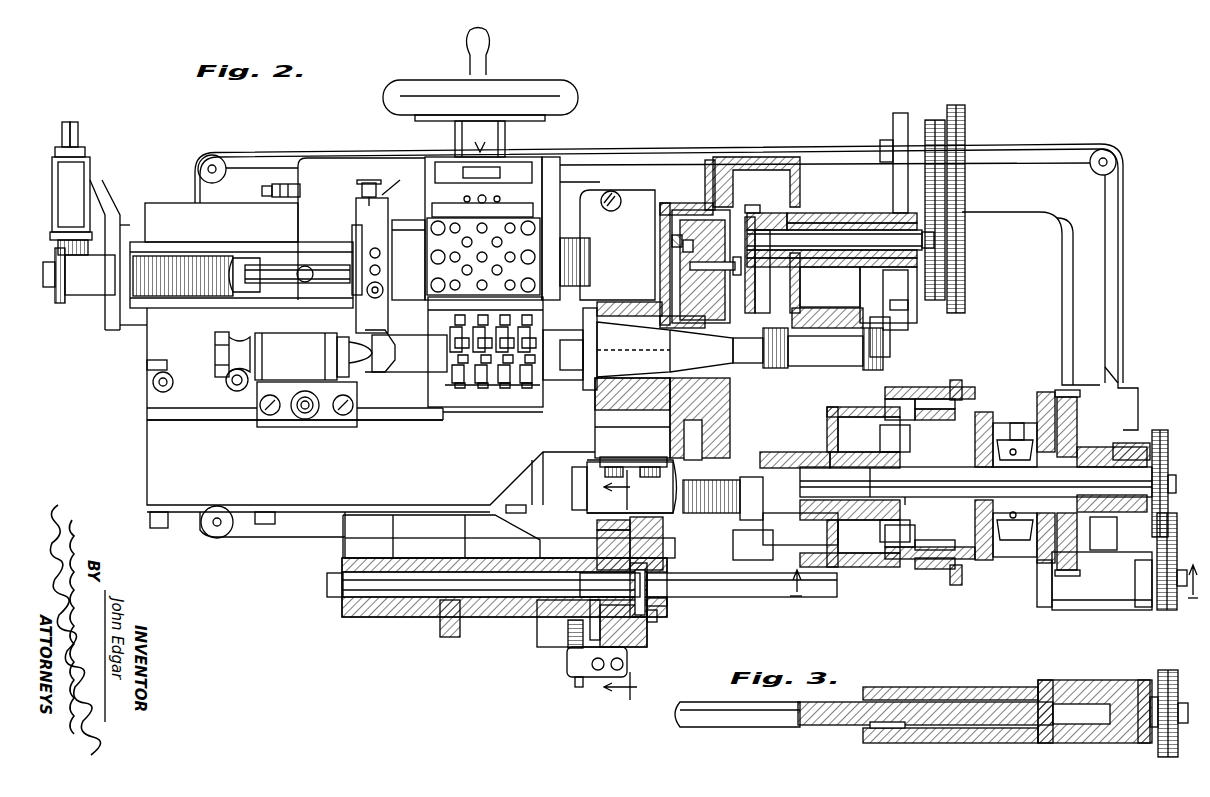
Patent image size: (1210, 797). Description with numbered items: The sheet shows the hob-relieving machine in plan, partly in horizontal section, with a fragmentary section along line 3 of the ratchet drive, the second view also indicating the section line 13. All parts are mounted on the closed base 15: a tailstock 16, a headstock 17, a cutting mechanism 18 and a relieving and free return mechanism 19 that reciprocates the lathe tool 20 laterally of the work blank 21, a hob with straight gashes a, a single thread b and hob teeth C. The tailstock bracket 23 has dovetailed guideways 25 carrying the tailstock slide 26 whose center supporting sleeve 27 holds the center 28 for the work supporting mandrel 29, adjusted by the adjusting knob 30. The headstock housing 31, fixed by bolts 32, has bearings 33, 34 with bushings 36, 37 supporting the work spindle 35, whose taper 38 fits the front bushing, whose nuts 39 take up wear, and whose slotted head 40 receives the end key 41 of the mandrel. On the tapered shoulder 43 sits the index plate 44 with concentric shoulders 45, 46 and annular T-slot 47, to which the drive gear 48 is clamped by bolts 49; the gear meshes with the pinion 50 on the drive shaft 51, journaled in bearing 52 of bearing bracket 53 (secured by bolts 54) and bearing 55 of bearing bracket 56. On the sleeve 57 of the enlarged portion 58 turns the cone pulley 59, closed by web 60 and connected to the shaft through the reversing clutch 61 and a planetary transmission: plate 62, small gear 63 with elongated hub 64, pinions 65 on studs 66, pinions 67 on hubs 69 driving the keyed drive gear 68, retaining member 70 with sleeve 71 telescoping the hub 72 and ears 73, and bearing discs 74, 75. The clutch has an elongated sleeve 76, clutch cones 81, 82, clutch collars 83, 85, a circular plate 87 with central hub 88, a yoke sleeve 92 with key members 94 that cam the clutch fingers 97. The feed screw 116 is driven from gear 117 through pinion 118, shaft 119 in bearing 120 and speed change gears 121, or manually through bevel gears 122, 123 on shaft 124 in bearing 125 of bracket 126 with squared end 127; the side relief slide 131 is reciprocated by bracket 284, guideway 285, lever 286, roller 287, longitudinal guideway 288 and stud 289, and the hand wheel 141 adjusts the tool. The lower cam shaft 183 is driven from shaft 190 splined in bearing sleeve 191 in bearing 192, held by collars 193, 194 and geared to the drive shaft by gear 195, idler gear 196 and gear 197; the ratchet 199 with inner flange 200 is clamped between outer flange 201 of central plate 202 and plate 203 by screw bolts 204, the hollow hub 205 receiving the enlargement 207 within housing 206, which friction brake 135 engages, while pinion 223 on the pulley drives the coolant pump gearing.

In FIG. 2, the section line 13 is at (620, 588).
In FIG. 2, the closed base 15 is at (1110, 258).
In FIG. 2, the tailstock 16 is at (166, 403).
In FIG. 2, the headstock 17 is at (643, 291).
In FIG. 2, the cutting mechanism 18 is at (572, 183).
In FIG. 2, the relieving and free return mechanism 19 is at (424, 637).
In FIG. 2, the lathe tool 20 is at (510, 305).
In FIG. 2, the work blank 21 is at (450, 388).
In FIG. 2, the bracket 23 is at (157, 462).
In FIG. 2, the dovetailed guideways 25 is at (155, 420).
In FIG. 2, the tailstock slide 26 is at (295, 417).
In FIG. 2, the center supporting sleeve 27 is at (283, 364).
In FIG. 2, the center 28 is at (360, 335).
In FIG. 2, the work supporting mandrel 29 is at (395, 360).
In FIG. 2, the adjusting knob 30 is at (218, 352).
In FIG. 2, the housing 31 is at (770, 160).
In FIG. 2, the bolts 32 is at (611, 201).
In FIG. 2, the bearing 33 is at (820, 298).
In FIG. 2, the bearing 34 is at (595, 300).
In FIG. 2, the work spindle 35 is at (828, 325).
In FIG. 2, the bushing 36 is at (858, 335).
In FIG. 2, the front bushing 37 is at (620, 315).
In FIG. 2, the taper 38 is at (665, 339).
In FIG. 2, the nuts 39 is at (880, 335).
In FIG. 2, the slotted head 40 is at (590, 322).
In FIG. 2, the end key 41 is at (575, 352).
In FIG. 2, the tapered shoulder 43 is at (675, 355).
In FIG. 2, the index plate 44 is at (672, 245).
In FIG. 2, the concentric shoulder 45 is at (715, 370).
In FIG. 2, the concentric shoulder 46 is at (675, 416).
In FIG. 2, the annular T-slot 47 is at (680, 442).
In FIG. 2, the drive gear 48 is at (680, 222).
In FIG. 2, the bolts 49 is at (690, 266).
In FIG. 2, the pinion 50 is at (703, 515).
In FIG. 2, the drive shaft 51 is at (1103, 533).
In FIG. 2, the bearing 52 is at (600, 482).
In FIG. 2, the bearing bracket 53 is at (590, 462).
In FIG. 2, the bolts 54 is at (613, 466).
In FIG. 2, the bearing 55 is at (1131, 438).
In FIG. 2, the bearing bracket 56 is at (1127, 393).
In FIG. 2, the sleeve 57 is at (776, 460).
In FIG. 2, the enlarged portion 58 is at (793, 462).
In FIG. 2, the cone pulley 59 is at (863, 401).
In FIG. 2, the web 60 is at (830, 526).
In FIG. 2, the reversing clutch 61 is at (1015, 356).
In FIG. 2, the plate 62 is at (955, 380).
In FIG. 2, the small gear 63 is at (976, 482).
In FIG. 2, the elongated hub 64 is at (1085, 476).
In FIG. 2, the pinions 65 is at (932, 408).
In FIG. 2, the studs 66 is at (985, 412).
In FIG. 2, the pinions 67 is at (910, 405).
In FIG. 2, the drive gear 68 is at (910, 478).
In FIG. 2, the hubs 69 is at (905, 395).
In FIG. 2, the annular retaining member 70 is at (898, 546).
In FIG. 2, the sleeve 71 is at (865, 535).
In FIG. 2, the hub 72 is at (845, 450).
In FIG. 2, the ears 73 is at (895, 430).
In FIG. 2, the bearing disc 74 is at (946, 476).
In FIG. 2, the bearing disc 75 is at (867, 482).
In FIG. 2, the elongated sleeve 76 is at (1005, 477).
In FIG. 2, the clutch cone 81 is at (1000, 560).
In FIG. 2, the clutch cone 82 is at (1062, 570).
In FIG. 2, the clutch collar 83 is at (995, 422).
In FIG. 2, the clutch collar 85 is at (1045, 421).
In FIG. 2, the circular plate 87 is at (1077, 410).
In FIG. 2, the central hub 88 is at (1100, 447).
In FIG. 2, the yoke sleeve 92 is at (1040, 545).
In FIG. 2, the key members 94 is at (1025, 423).
In FIG. 2, the clutch fingers 97 is at (1040, 484).
In FIG. 2, the feed screw 116 is at (176, 296).
In FIG. 2, the gear 117 is at (752, 290).
In FIG. 2, the pinion 118 is at (757, 212).
In FIG. 2, the shaft 119 is at (828, 228).
In FIG. 2, the bearing 120 is at (866, 212).
In FIG. 2, the speed change gears 121 is at (963, 210).
In FIG. 2, the bevel gear 122 is at (65, 300).
In FIG. 2, the bevel gear 123 is at (80, 258).
In FIG. 2, the shaft 124 is at (82, 153).
In FIG. 2, the bearing 125 is at (80, 170).
In FIG. 2, the bracket 126 is at (108, 200).
In FIG. 2, the squared end 127 is at (78, 128).
In FIG. 2, the side relief slide 131 is at (404, 250).
In FIG. 2, the friction brake 135 is at (575, 677).
In FIG. 2, the hand wheel 141 is at (508, 82).
In FIG. 2, the lower cam shaft 183 is at (500, 583).
In FIG. 2, the shaft 190 is at (750, 587).
In FIG. 3, the shaft 190 is at (748, 720).
In FIG. 3, the bearing sleeve 191 is at (930, 688).
In FIG. 2, the bearing 192 is at (1095, 600).
In FIG. 3, the bearing 192 is at (1093, 682).
In FIG. 2, the collar 193 is at (1045, 605).
In FIG. 3, the collar 193 is at (1046, 742).
In FIG. 2, the collar 194 is at (1148, 608).
In FIG. 3, the collar 194 is at (1147, 745).
In FIG. 3, the gear 195 is at (1165, 675).
In FIG. 2, the idler gear 196 is at (1172, 440).
In FIG. 2, the gear 197 is at (1148, 430).
In FIG. 2, the ratchet 199 is at (645, 633).
In FIG. 2, the inner flange 200 is at (650, 543).
In FIG. 2, the outer flange 201 is at (600, 525).
In FIG. 2, the central plate 202 is at (600, 548).
In FIG. 2, the plate 203 is at (640, 645).
In FIG. 2, the screw bolts 204 is at (660, 617).
In FIG. 2, the hollow hub 205 is at (668, 607).
In FIG. 2, the housing 206 is at (610, 590).
In FIG. 2, the enlargement 207 is at (648, 582).
In FIG. 2, the pinion 223 is at (753, 545).
In FIG. 2, the bracket 284 is at (362, 228).
In FIG. 2, the guideway 285 is at (358, 245).
In FIG. 2, the lever 286 is at (256, 262).
In FIG. 2, the roller 287 is at (384, 291).
In FIG. 2, the longitudinal guideway 288 is at (283, 265).
In FIG. 2, the stud 289 is at (300, 280).
In FIG. 2, the section line 3 is at (994, 591).
In FIG. 2, the straight gashes a is at (445, 338).
In FIG. 2, the single thread b is at (492, 390).
In FIG. 2, the roller C is at (450, 349).